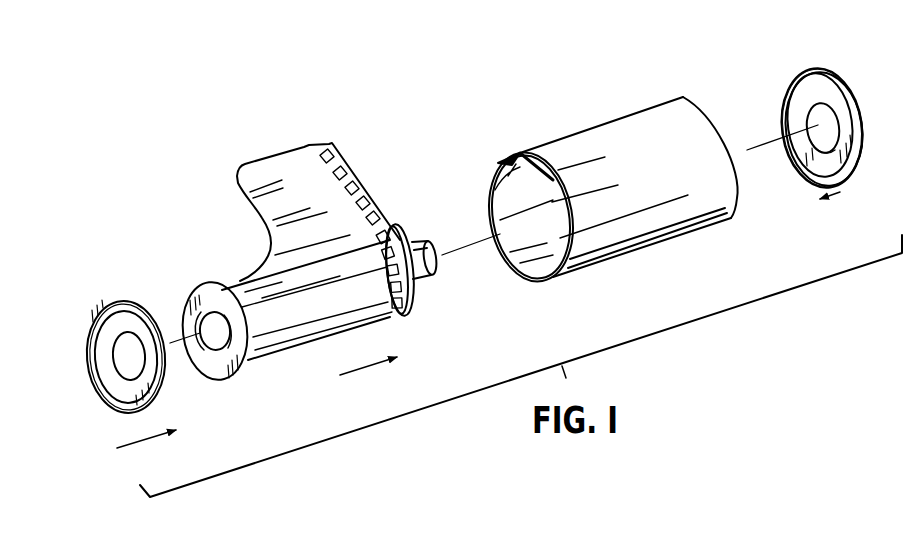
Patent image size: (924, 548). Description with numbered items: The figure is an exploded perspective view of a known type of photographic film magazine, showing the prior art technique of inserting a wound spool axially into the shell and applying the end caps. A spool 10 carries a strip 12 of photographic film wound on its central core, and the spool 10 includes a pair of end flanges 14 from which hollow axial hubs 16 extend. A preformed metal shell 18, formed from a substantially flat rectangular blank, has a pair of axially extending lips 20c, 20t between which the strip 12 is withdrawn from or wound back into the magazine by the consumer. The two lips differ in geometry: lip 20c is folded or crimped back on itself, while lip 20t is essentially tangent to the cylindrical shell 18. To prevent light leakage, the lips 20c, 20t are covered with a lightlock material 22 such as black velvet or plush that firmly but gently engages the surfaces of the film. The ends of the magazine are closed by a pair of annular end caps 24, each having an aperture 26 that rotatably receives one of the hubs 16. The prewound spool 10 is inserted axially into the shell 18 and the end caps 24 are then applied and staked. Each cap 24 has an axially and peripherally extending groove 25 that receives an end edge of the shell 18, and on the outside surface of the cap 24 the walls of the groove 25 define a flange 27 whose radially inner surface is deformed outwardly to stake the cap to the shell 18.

The spool 10 is at (410, 222).
The strip of photographic film 12 is at (280, 167).
The end flanges 14 is at (202, 280).
The hollow axial hubs 16 is at (220, 377).
The preformed metal shell 18 is at (648, 232).
The lip 20t is at (612, 125).
The lip 20c is at (505, 156).
The lightlock material 22 is at (493, 201).
The annular end caps 24 is at (102, 307).
The grooves 25 is at (775, 109).
The aperture 26 is at (113, 367).
The flange 27 is at (90, 343).